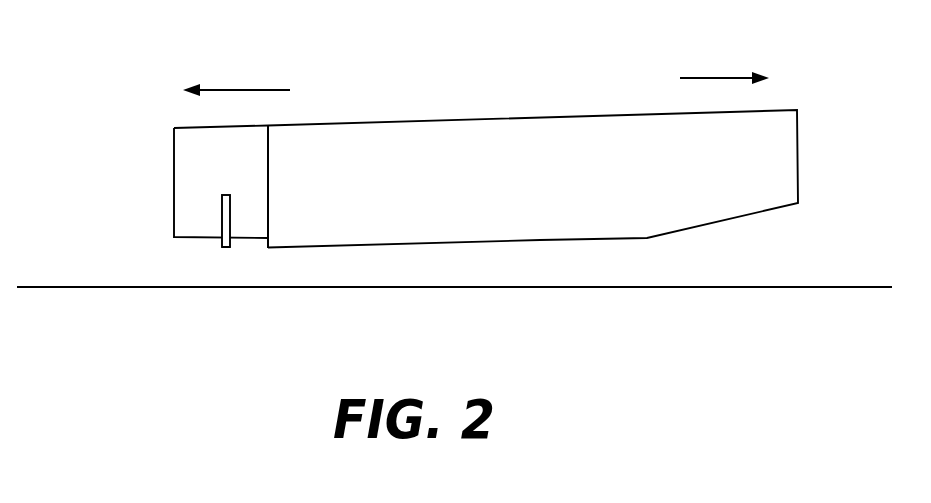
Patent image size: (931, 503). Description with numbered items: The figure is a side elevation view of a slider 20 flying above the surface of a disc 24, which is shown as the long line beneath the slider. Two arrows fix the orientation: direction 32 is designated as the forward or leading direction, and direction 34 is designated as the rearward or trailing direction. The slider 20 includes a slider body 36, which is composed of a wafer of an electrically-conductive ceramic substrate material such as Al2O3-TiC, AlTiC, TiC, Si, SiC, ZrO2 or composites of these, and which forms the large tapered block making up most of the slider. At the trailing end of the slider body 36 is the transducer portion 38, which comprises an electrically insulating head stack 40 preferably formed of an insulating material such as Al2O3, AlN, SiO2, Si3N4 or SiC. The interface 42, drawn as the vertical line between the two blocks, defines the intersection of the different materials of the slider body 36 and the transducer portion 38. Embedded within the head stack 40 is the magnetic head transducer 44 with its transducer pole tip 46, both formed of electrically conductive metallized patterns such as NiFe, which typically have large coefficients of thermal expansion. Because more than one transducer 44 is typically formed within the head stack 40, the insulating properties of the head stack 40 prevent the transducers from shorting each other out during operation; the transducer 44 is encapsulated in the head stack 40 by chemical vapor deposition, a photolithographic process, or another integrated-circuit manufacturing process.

The slider 20 is at (489, 161).
The disc 24 is at (709, 336).
The forward or leading direction 32 is at (724, 65).
The rearward or trailing direction 34 is at (236, 78).
The slider body 36 is at (423, 140).
The transducer portion 38 is at (148, 124).
The head stack 40 is at (188, 145).
The interface 42 is at (268, 165).
The transducer 44 is at (222, 200).
The transducer pole tip 46 is at (223, 250).